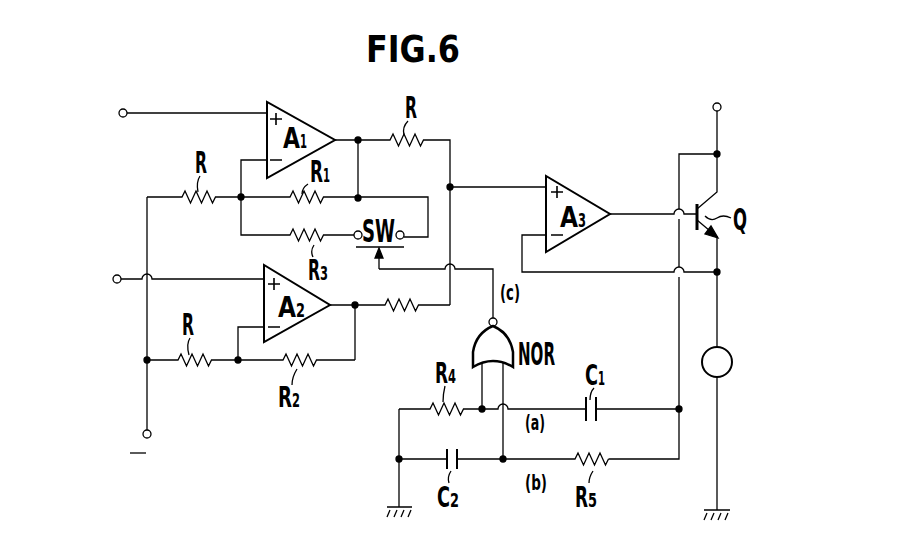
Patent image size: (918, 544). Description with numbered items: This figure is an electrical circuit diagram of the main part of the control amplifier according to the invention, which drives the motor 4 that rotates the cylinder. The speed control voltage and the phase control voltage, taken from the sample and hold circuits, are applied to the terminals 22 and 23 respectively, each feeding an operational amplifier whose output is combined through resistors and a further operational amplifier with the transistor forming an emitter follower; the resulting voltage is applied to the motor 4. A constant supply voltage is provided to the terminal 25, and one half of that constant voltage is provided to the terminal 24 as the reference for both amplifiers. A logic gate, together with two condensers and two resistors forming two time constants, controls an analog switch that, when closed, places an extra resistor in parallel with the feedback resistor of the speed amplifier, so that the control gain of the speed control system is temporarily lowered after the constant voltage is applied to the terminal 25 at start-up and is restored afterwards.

The terminal 22 is at (125, 109).
The terminal 23 is at (117, 275).
The terminal 24 is at (150, 431).
The terminal 25 is at (720, 111).
The motor 4 is at (726, 354).